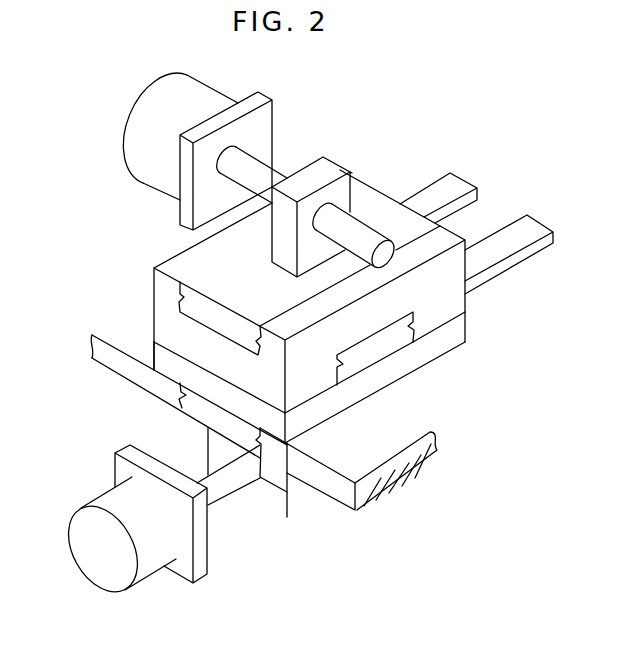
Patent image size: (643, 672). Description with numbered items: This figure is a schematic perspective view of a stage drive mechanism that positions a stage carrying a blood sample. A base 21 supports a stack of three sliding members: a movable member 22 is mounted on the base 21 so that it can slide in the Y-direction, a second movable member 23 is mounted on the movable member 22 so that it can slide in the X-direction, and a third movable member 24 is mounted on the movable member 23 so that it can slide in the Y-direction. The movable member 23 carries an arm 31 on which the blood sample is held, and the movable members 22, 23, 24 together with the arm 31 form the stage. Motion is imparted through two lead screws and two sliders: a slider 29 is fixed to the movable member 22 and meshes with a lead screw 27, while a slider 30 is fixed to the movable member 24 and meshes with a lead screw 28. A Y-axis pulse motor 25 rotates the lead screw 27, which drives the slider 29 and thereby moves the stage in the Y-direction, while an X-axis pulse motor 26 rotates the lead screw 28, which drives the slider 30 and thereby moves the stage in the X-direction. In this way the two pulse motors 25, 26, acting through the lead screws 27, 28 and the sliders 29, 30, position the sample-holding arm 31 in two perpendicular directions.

The base 21 is at (343, 497).
The movable member 22 is at (452, 336).
The movable member 23 is at (158, 285).
The movable member 24 is at (378, 198).
The Y-axis pulse motor 25 is at (105, 498).
The X-axis pulse motor 26 is at (208, 96).
The lead screw 27 is at (223, 488).
The lead screw 28 is at (272, 177).
The slider 29 is at (276, 519).
The slider 30 is at (335, 167).
The arm 31 is at (462, 185).